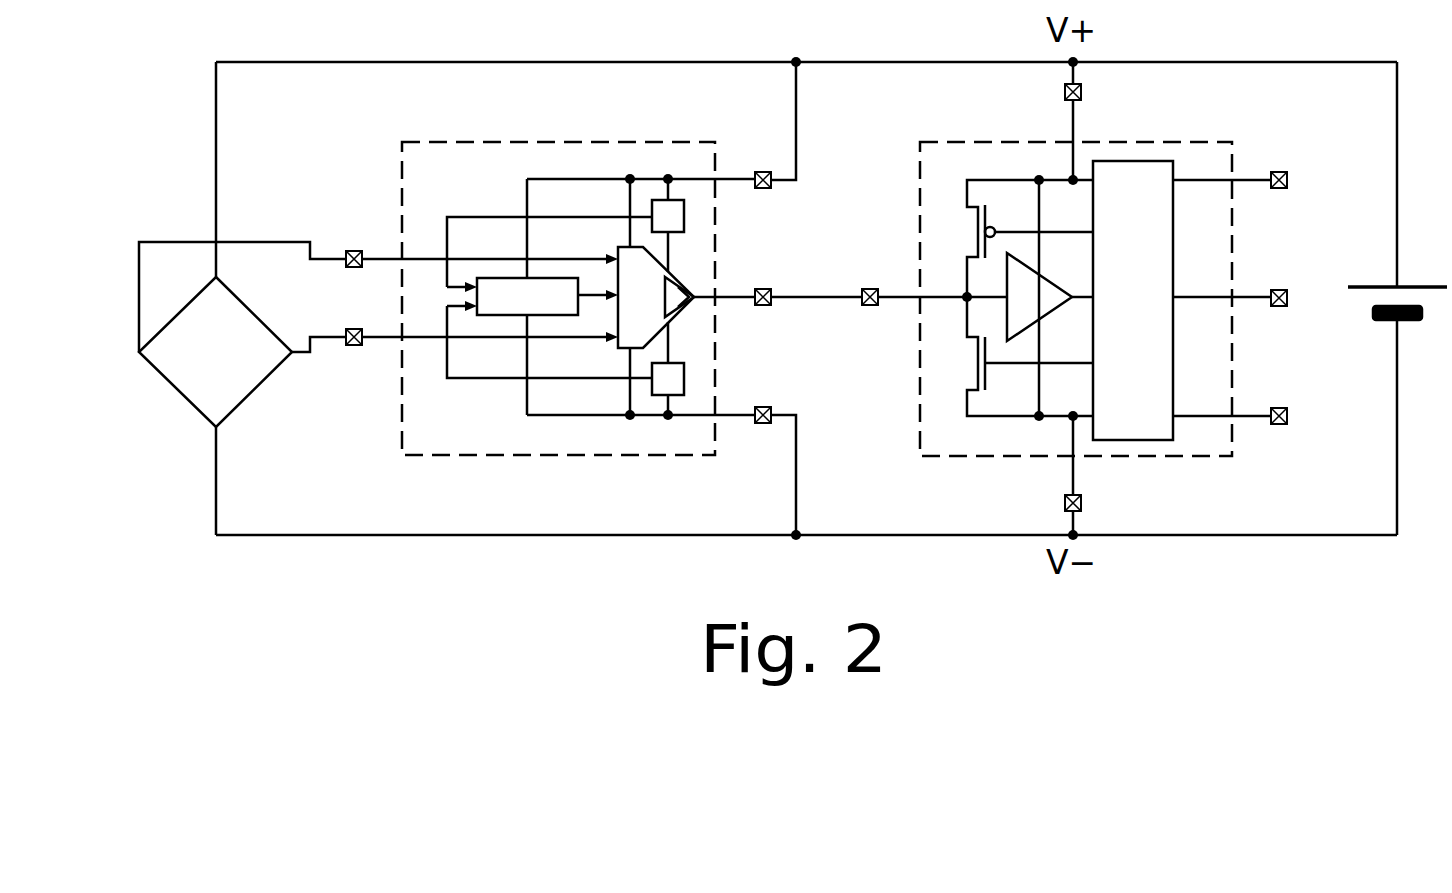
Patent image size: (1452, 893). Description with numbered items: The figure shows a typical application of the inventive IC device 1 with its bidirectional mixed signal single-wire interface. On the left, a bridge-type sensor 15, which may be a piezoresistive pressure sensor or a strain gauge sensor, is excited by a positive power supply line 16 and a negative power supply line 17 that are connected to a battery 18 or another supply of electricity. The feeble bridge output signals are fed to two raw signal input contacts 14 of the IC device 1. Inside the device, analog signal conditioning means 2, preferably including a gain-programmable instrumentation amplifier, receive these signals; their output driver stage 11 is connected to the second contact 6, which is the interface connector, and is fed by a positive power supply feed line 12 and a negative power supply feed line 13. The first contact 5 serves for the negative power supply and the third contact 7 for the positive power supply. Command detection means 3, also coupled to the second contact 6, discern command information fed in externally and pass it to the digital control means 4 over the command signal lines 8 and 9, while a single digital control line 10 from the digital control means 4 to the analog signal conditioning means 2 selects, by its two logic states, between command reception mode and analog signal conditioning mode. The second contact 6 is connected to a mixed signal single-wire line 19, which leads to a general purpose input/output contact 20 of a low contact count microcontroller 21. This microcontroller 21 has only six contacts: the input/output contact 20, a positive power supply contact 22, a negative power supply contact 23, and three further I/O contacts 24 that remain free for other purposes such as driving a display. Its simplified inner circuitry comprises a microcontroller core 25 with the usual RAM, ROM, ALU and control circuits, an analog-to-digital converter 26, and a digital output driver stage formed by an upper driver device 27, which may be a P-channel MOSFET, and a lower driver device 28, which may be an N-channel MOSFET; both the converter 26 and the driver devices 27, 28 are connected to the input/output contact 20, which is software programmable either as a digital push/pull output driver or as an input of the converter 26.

The integrated circuit device 1 is at (428, 437).
The analog signal conditioning means 2 is at (656, 297).
The command detection means 3 is at (668, 298).
The digital control means 4 is at (527, 297).
The first contact 5 is at (774, 471).
The second contact 6 is at (768, 283).
The third contact 7 is at (774, 125).
The command signal line for command bit '1' 8 is at (488, 383).
The command signal line for command bit '0' 9 is at (487, 214).
The digital control line 10 is at (592, 292).
The output driver stage 11 is at (683, 288).
The positive power supply feed line 12 is at (673, 249).
The negative power supply feed line 13 is at (670, 340).
The raw signal input contacts 14 is at (343, 330).
The bridge-type sensor 15 is at (242, 334).
The positive power supply line 16 is at (806, 43).
The negative power supply line 17 is at (806, 555).
The battery 18 is at (1397, 298).
The mixed signal single-wire line 19 is at (828, 303).
The general purpose input/output contact 20 is at (868, 283).
The microcontroller 21 is at (947, 438).
The positive power supply contact 22 is at (1094, 121).
The negative power supply contact 23 is at (1095, 475).
The further I/O contacts 24 is at (1290, 185).
The microcontroller core 25 is at (1182, 300).
The analog-to-digital converter 26 is at (1050, 297).
The upper digital driver stage device 27 is at (1014, 238).
The lower digital driver stage device 28 is at (1014, 356).